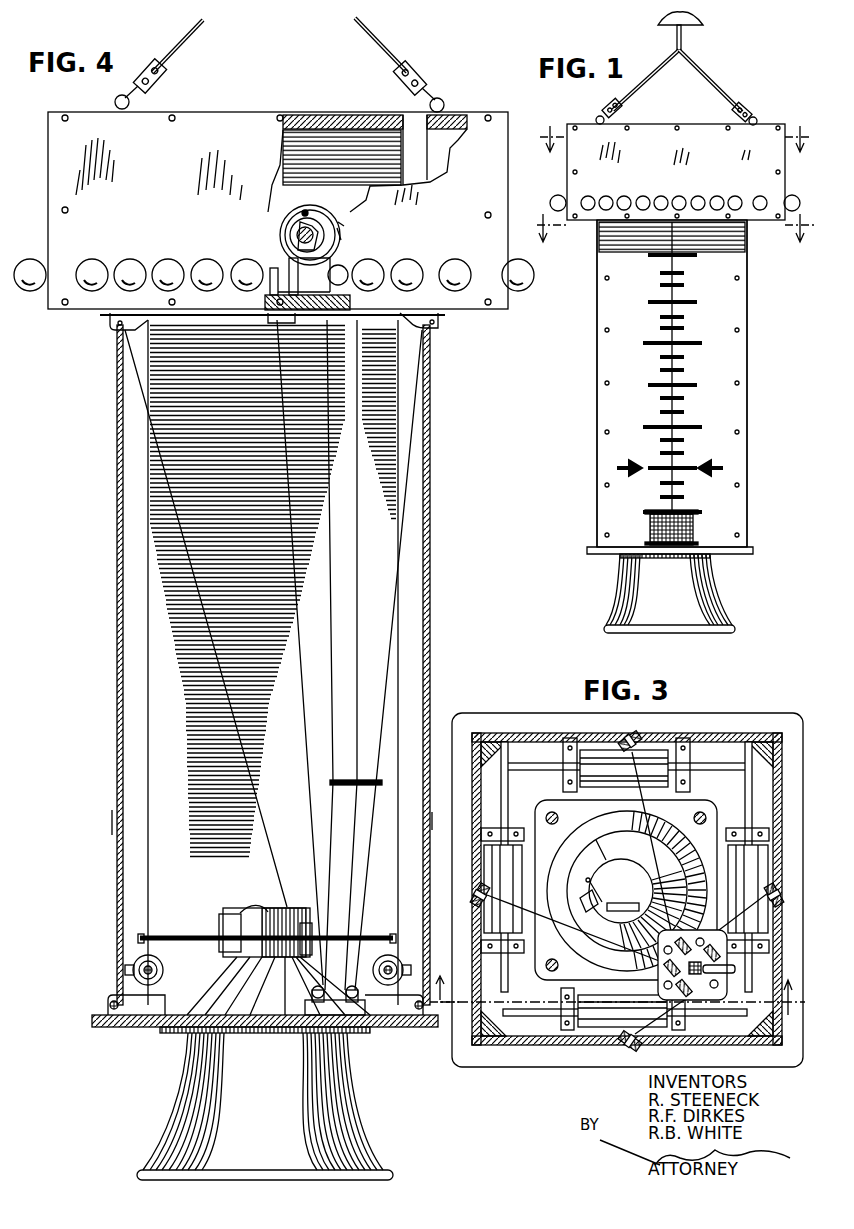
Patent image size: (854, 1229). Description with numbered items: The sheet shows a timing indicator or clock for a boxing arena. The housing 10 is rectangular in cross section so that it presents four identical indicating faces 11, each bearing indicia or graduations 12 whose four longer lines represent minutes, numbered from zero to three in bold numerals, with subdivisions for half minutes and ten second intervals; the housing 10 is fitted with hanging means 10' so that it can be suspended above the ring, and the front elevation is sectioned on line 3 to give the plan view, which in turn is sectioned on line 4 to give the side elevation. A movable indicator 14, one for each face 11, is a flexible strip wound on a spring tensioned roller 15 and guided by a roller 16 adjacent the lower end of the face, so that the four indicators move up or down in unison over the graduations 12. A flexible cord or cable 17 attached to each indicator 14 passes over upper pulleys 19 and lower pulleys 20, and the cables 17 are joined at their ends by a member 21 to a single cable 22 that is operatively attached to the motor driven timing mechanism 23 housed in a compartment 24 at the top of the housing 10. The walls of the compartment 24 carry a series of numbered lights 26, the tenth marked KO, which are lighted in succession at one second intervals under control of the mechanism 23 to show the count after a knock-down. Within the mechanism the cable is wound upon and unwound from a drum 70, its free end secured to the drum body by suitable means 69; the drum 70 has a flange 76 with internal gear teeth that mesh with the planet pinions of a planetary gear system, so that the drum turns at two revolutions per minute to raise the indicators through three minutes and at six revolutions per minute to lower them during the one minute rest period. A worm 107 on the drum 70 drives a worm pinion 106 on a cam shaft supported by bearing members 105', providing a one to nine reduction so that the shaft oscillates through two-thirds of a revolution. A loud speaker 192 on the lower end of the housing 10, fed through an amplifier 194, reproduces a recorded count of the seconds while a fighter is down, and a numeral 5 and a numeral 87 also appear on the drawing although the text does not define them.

In FIG. 1, the section line 3— 3 is at (674, 223).
In FIG. 4, the section line 4— 4 is at (445, 979).
In FIG. 3, the section line 4— 4 is at (622, 988).
In FIG. 1, the section line 5- 5 is at (676, 128).
In FIG. 4, the housing 10 is at (282, 413).
In FIG. 1, the housing 10 is at (654, 387).
In FIG. 4, the hanging means 10' is at (279, 65).
In FIG. 1, the hanging means 10' is at (676, 68).
In FIG. 4, the indicating face 11 is at (160, 477).
In FIG. 1, the indicating face 11 is at (725, 378).
In FIG. 1, the indicia or graduations 12 is at (678, 327).
In FIG. 4, the movable indicator 14 is at (115, 818).
In FIG. 1, the movable indicator 14 is at (648, 530).
In FIG. 3, the movable indicator 14 is at (627, 889).
In FIG. 4, the spring tensioned roller 15 is at (306, 922).
In FIG. 3, the spring tensioned roller 15 is at (592, 750).
In FIG. 4, the guide roller 16 is at (113, 1020).
In FIG. 3, the guide roller 16 is at (665, 733).
In FIG. 4, the flexible cord or cable 17 is at (430, 566).
In FIG. 1, the flexible cord or cable 17 is at (665, 390).
In FIG. 4, the upper pulley 19 is at (290, 322).
In FIG. 3, the upper pulley 19 is at (633, 735).
In FIG. 4, the lower pulley 20 is at (330, 988).
In FIG. 3, the lower pulley 20 is at (692, 962).
In FIG. 4, the joining member 21 is at (361, 780).
In FIG. 3, the joining member 21 is at (736, 969).
In FIG. 4, the single cable 22 is at (336, 620).
In FIG. 4, the motor driven timing mechanism 23 is at (328, 214).
In FIG. 4, the compartment 24 is at (237, 127).
In FIG. 1, the compartment 24 is at (702, 137).
In FIG. 4, the lights 26 is at (78, 316).
In FIG. 1, the lights 26 is at (558, 195).
In FIG. 4, the securing means 69 is at (307, 212).
In FIG. 4, the drum 70 is at (325, 232).
In FIG. 4, the flange 76 is at (342, 235).
In FIG. 4, the lamp socket 87 is at (344, 269).
In FIG. 4, the bearing members 105' is at (289, 233).
In FIG. 4, the worm pinion 106 is at (328, 282).
In FIG. 4, the worm 107 is at (293, 228).
In FIG. 4, the loud speaker 192 is at (345, 1128).
In FIG. 1, the loud speaker 192 is at (700, 590).
In FIG. 4, the amplifier 194 is at (266, 918).
In FIG. 3, the amplifier 194 is at (626, 890).